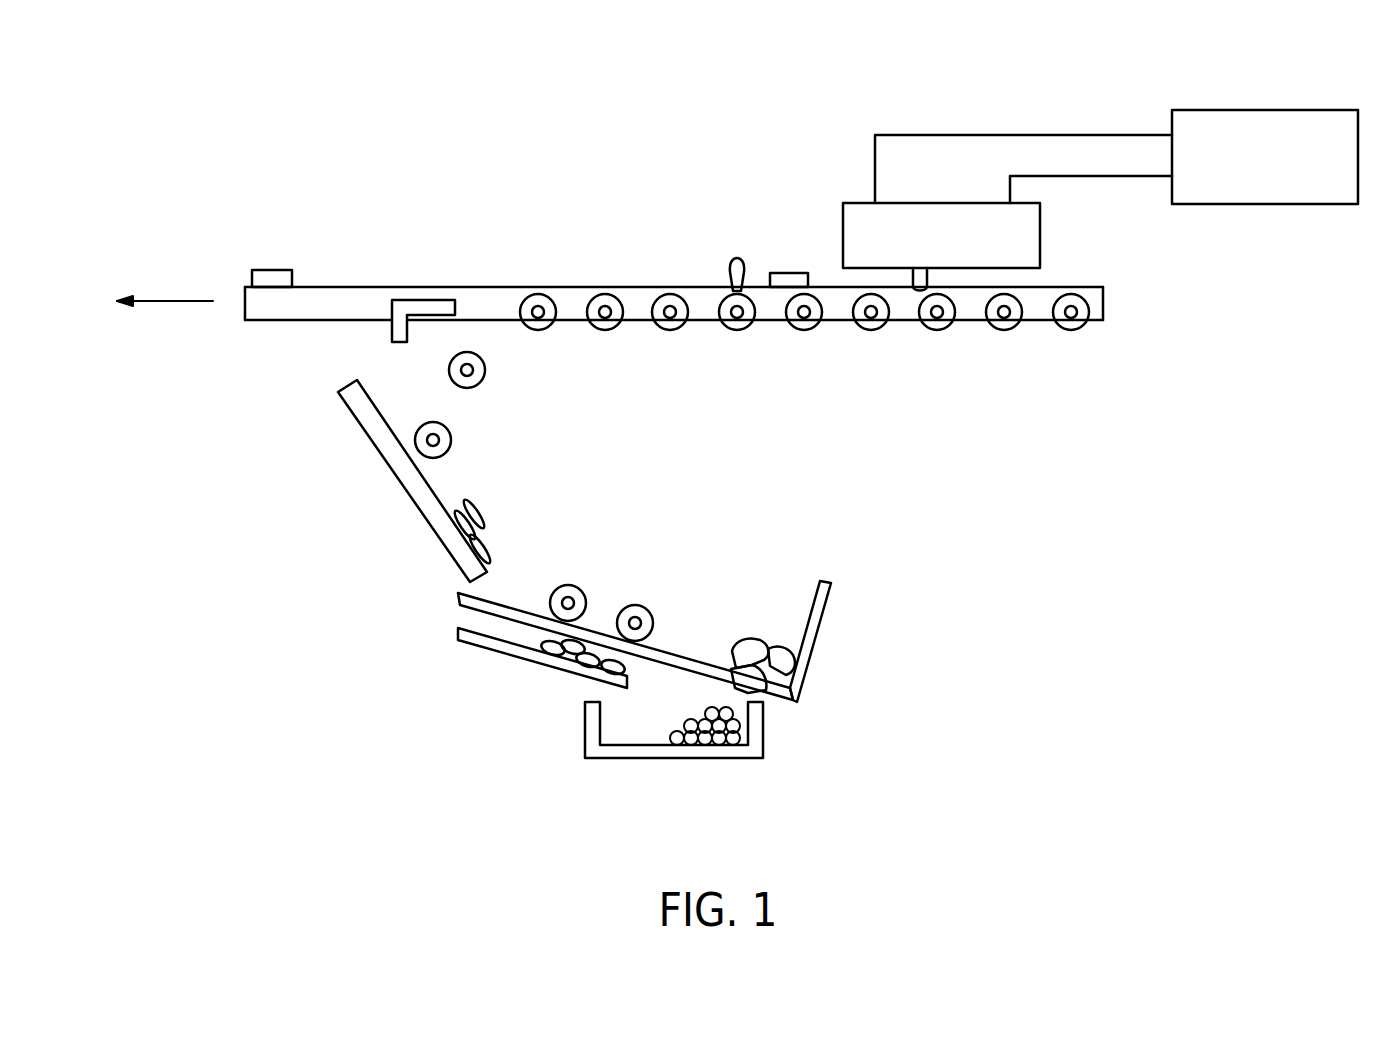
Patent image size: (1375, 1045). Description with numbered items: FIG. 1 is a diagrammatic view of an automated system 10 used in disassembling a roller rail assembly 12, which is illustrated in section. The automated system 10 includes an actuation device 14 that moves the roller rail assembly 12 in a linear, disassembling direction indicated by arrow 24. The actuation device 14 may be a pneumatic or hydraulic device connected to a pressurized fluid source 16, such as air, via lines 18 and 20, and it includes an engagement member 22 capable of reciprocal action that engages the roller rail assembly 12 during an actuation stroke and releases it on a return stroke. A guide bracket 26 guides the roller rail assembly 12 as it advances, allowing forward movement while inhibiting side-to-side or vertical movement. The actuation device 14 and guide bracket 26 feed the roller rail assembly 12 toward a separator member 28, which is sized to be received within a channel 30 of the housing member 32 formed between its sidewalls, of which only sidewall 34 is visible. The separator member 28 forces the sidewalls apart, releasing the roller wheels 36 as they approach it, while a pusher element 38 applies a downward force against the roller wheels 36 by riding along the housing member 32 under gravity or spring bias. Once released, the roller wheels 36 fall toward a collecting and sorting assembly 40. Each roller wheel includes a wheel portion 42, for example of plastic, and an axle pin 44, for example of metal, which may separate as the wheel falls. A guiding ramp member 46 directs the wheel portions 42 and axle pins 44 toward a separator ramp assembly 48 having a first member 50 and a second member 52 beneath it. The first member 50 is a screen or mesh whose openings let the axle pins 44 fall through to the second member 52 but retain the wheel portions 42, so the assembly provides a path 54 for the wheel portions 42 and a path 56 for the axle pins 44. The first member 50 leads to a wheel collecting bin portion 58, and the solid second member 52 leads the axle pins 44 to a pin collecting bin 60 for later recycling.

The automated system 10 is at (369, 94).
The roller rail assembly 12 is at (642, 288).
The actuation device 14 is at (843, 205).
The pressurized fluid source 16 is at (1270, 110).
The line 18 is at (1008, 135).
The line 20 is at (1106, 176).
The engagement member 22 is at (926, 290).
The arrow 24 is at (170, 298).
The guide bracket 26 is at (272, 270).
The separator member 28 is at (423, 262).
The channel 30 is at (642, 308).
The housing member 32 is at (311, 320).
The sidewall 34 is at (346, 287).
The roller wheels 36 is at (673, 331).
The pusher element 38 is at (737, 258).
The collecting and sorting assembly 40 is at (630, 541).
The wheel portion 42 is at (452, 440).
The axle pin 44 is at (483, 518).
The guiding ramp member 46 is at (403, 486).
The separator ramp assembly 48 is at (474, 658).
The first member 50 is at (695, 661).
The second member 52 is at (573, 656).
The path 54 is at (570, 543).
The path 56 is at (463, 669).
The wheel collecting bin portion 58 is at (845, 641).
The pin collecting bin 60 is at (657, 785).